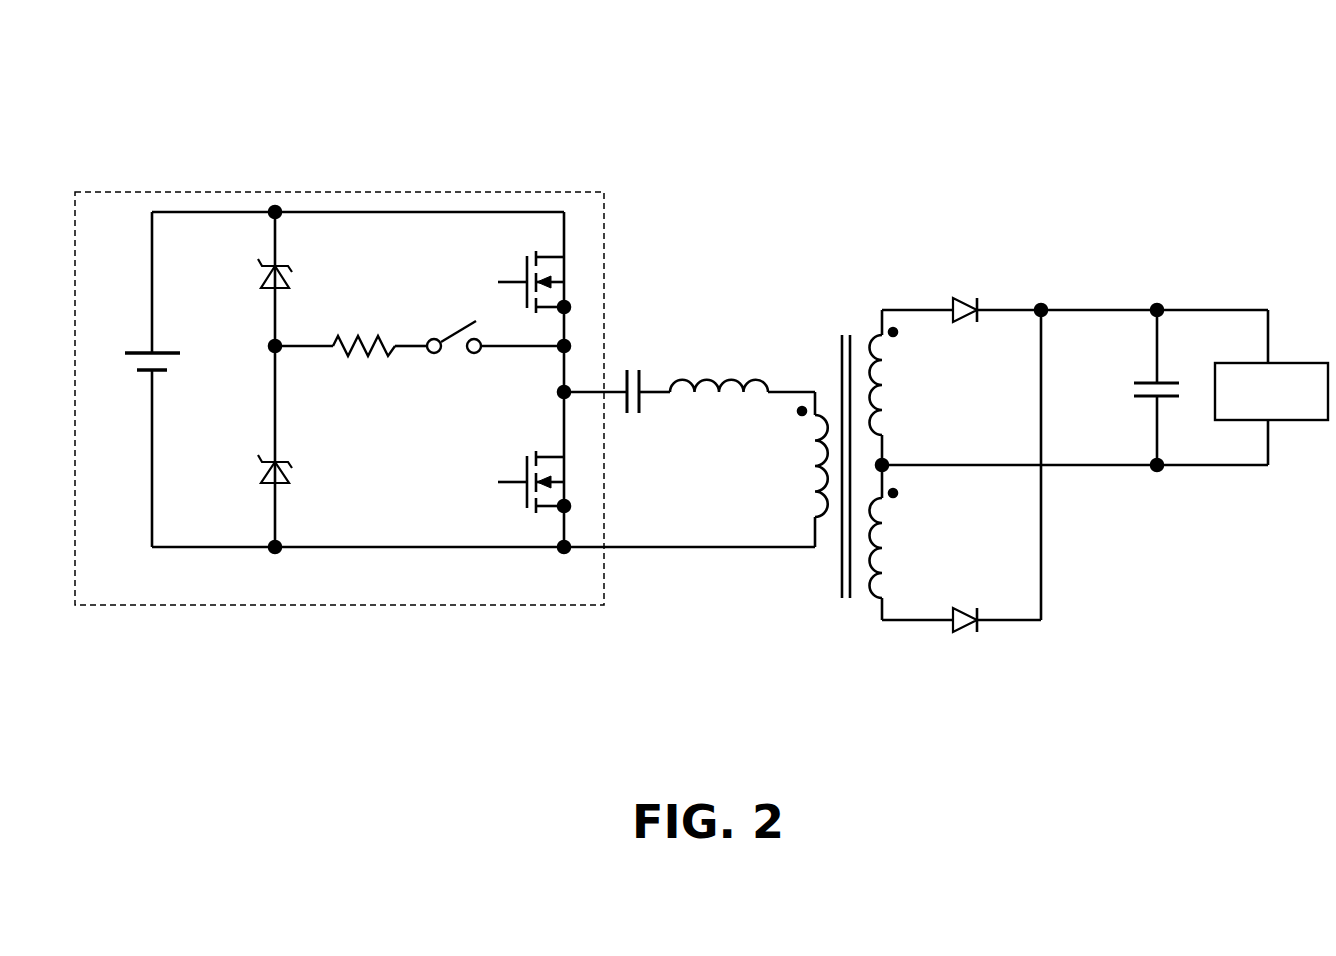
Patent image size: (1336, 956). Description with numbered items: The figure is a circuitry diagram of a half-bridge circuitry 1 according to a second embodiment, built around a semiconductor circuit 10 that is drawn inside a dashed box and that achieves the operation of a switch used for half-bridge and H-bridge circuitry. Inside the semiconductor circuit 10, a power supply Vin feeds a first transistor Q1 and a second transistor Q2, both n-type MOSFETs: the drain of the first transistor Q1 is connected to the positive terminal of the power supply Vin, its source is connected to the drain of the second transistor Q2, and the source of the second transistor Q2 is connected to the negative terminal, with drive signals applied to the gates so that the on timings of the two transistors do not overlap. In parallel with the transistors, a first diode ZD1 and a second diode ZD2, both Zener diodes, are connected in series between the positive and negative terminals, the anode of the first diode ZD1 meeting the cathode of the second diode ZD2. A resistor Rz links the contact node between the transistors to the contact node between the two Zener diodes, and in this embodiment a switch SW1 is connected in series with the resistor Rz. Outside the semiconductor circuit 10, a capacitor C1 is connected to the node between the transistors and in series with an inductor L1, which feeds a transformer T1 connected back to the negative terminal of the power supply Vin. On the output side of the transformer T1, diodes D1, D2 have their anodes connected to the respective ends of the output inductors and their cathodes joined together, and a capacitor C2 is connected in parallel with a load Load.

The half-bridge circuitry 1 is at (634, 113).
The semiconductor circuit 10 is at (506, 191).
The power supply Vin is at (140, 379).
The first diode ZD1 is at (304, 262).
The second diode ZD2 is at (304, 461).
The resistor Rz is at (351, 367).
The switch SW1 is at (494, 359).
The first transistor Q1 is at (530, 272).
The second transistor Q2 is at (531, 469).
The capacitor C1 is at (617, 410).
The inductor L1 is at (742, 365).
The transformer T1 is at (847, 449).
The diode D1 is at (961, 295).
The diode D2 is at (961, 604).
The capacitor C2 is at (1134, 387).
The load Load is at (1271, 387).